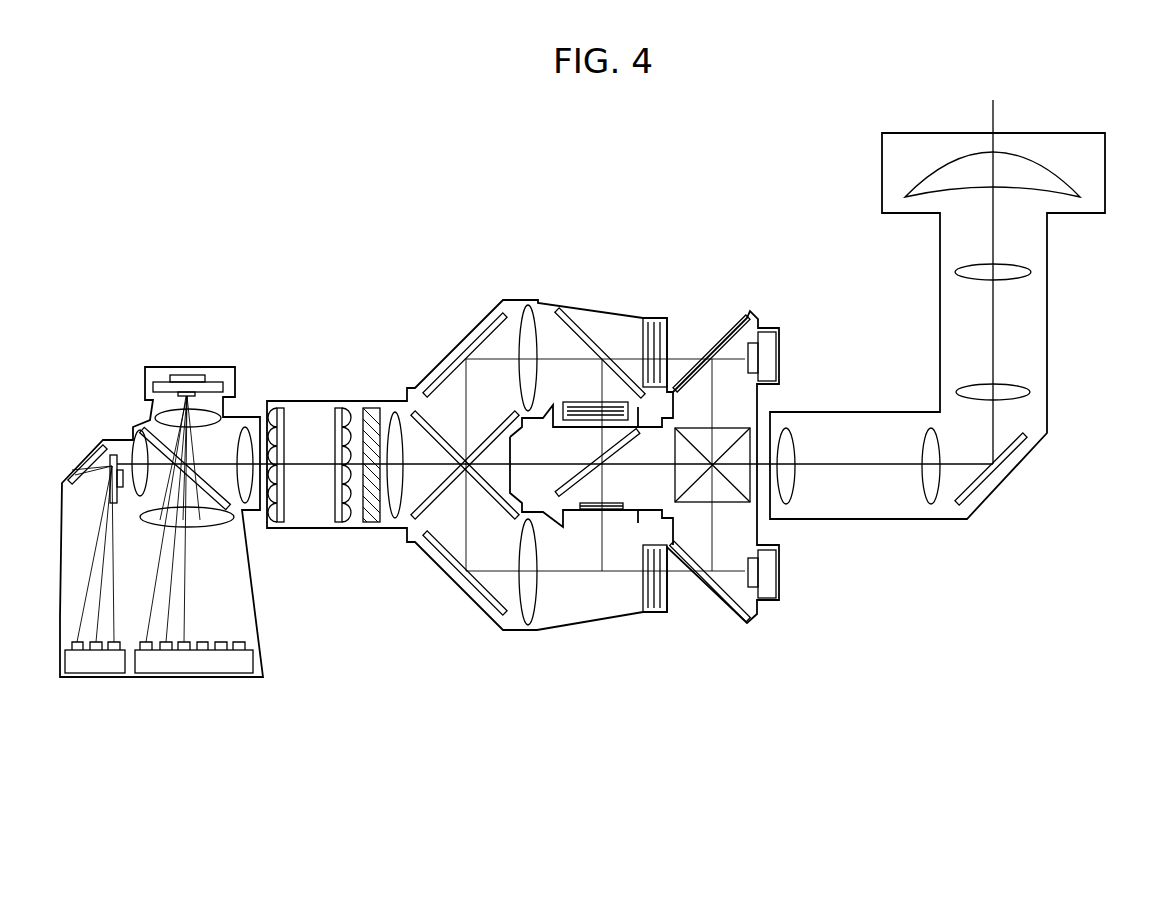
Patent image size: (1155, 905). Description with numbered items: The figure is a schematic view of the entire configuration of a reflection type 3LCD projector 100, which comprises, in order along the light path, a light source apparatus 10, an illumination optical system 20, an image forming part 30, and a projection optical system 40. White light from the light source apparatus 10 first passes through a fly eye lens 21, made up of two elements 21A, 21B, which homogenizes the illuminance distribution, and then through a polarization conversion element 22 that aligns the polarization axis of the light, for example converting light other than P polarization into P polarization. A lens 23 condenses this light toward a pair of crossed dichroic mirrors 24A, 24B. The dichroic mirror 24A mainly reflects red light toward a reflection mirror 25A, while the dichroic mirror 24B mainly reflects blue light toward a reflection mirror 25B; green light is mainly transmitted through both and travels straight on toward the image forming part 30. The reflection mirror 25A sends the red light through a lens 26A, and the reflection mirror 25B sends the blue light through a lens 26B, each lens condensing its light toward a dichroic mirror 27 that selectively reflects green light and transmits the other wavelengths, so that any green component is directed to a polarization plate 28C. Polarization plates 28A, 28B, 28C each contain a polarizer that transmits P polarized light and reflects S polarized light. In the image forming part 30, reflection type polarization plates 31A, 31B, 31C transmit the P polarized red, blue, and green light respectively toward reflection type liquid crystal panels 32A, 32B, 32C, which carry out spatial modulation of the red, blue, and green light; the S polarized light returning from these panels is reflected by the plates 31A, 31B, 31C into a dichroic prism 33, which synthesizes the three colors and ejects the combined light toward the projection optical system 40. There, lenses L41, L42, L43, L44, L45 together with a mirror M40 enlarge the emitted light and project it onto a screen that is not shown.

The projector 100 is at (386, 178).
The light source apparatus 10 is at (184, 732).
The illumination optical system 20 is at (483, 674).
The fly eye lens 21 is at (355, 323).
The fly eye lens 21A is at (282, 417).
The fly eye lens 21B is at (338, 417).
The polarization conversion element 22 is at (373, 510).
The lens 23 is at (395, 427).
The dichroic mirror 24A is at (420, 515).
The dichroic mirror 24B is at (418, 412).
The reflection mirror 25A is at (473, 330).
The reflection mirror 25B is at (450, 567).
The lens 26A is at (524, 320).
The lens 26B is at (533, 603).
The dichroic mirror 27 is at (578, 315).
The polarization plate 28A is at (650, 318).
The polarization plate 28B is at (648, 615).
The polarization plate 28C is at (606, 400).
The image forming part 30 is at (772, 703).
The reflection type polarization plate 31A is at (735, 317).
The reflection type polarization plate 31B is at (758, 615).
The reflection type polarization plate 31C is at (628, 440).
The reflection type liquid crystal panel 32A is at (767, 342).
The reflection type liquid crystal panel 32B is at (767, 580).
The reflection type liquid crystal panel 32C is at (580, 515).
The dichroic prism 33 is at (740, 527).
The projection optical system 40 is at (1021, 524).
The lens L41 is at (788, 447).
The lens L42 is at (938, 487).
The lens L43 is at (1018, 392).
The lens L44 is at (1017, 268).
The lens L45 is at (1047, 177).
The mirror M40 is at (1015, 450).